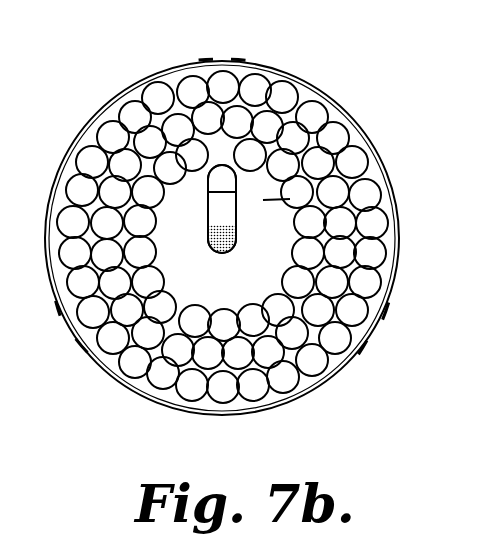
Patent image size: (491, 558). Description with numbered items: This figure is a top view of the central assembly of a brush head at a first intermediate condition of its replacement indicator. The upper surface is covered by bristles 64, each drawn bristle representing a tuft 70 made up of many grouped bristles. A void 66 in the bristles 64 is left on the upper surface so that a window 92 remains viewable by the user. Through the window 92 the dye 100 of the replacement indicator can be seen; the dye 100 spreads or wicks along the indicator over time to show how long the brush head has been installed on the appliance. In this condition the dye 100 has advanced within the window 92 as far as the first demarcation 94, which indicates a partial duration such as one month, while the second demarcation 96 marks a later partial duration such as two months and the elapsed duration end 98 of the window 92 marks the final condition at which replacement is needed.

The bristles 64 is at (372, 295).
The void 66 is at (237, 236).
The tuft 70 is at (368, 150).
The window 92 is at (292, 240).
The first demarcation 94 is at (208, 221).
The second demarcation 96 is at (237, 192).
The elapsed duration end 98 is at (218, 165).
The dye 100 is at (208, 250).